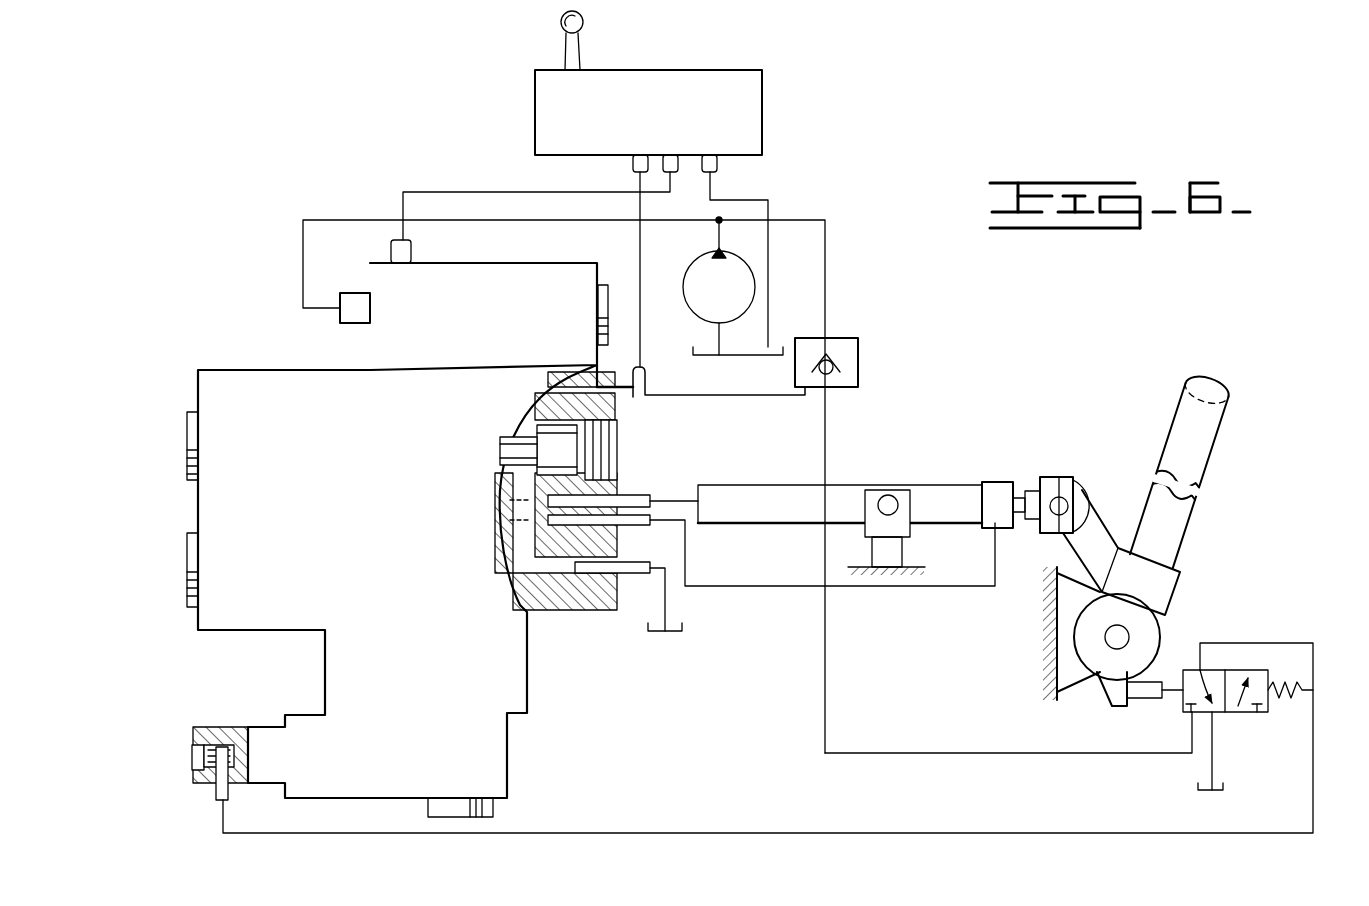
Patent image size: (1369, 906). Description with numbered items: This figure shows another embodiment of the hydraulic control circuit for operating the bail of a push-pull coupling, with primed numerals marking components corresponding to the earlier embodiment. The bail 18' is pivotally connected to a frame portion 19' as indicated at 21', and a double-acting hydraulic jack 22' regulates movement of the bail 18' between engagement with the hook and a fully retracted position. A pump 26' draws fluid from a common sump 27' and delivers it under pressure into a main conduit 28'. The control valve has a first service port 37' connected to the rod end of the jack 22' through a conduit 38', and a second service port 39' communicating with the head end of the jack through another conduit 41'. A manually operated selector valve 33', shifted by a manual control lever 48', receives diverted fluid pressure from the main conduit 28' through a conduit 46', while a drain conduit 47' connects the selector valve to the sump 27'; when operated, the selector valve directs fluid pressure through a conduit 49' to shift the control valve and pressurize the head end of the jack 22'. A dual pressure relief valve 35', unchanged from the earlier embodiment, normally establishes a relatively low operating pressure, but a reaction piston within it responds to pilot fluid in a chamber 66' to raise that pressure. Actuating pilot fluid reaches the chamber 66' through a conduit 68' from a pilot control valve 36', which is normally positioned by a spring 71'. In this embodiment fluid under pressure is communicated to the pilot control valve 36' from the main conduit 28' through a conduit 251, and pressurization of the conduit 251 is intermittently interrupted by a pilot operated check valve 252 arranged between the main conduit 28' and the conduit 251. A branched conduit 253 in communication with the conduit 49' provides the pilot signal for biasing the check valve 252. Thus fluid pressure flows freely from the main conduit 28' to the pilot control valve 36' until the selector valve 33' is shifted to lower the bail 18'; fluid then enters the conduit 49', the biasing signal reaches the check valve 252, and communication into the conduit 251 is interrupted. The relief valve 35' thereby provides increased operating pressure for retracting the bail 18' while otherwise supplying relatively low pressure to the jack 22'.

The bail 18' is at (1200, 469).
The frame portion 19' is at (1060, 636).
The pivotal connection 21' is at (1121, 585).
The double-acting hydraulic jack 22' is at (893, 508).
The pump 26' is at (719, 286).
The common sump 27' is at (935, 583).
The main conduit 28' is at (562, 464).
The selector valve 33' is at (693, 121).
The dual pressure relief valve 35' is at (395, 540).
The pilot control valve 36' is at (1205, 723).
The first service port 37' is at (609, 544).
The conduit 38' is at (822, 577).
The second service port 39' is at (613, 487).
The conduit 41' is at (696, 473).
The conduit 46' is at (530, 211).
The drain conduit 47' is at (757, 256).
The manual control lever 48' is at (597, 40).
The conduit 49' is at (663, 269).
The chamber 66' is at (191, 778).
The conduit 68' is at (768, 738).
The spring 71' is at (1313, 692).
The conduit 251 is at (828, 705).
The pilot operated check valve 252 is at (858, 368).
The branched conduit 253 is at (676, 397).